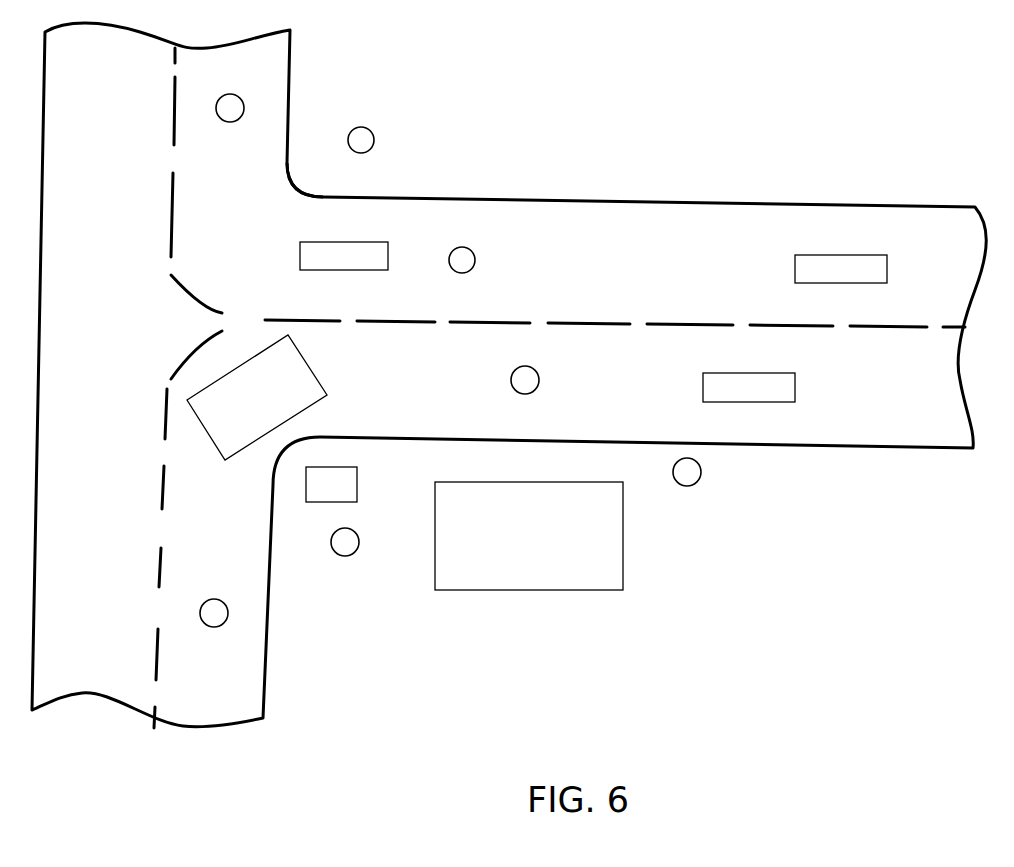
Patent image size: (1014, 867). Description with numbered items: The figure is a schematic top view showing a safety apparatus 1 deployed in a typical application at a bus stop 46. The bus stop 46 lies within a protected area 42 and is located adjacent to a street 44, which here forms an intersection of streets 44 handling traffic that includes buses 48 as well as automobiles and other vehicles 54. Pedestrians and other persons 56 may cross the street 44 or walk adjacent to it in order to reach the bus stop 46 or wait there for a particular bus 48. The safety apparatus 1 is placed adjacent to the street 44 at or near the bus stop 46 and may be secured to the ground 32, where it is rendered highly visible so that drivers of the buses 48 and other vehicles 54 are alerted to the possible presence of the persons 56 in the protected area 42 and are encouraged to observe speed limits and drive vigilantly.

The street 44 is at (327, 208).
The vehicle 54 is at (300, 256).
The person 56 is at (231, 122).
The bus 48 is at (298, 382).
The safety apparatus 1 is at (290, 522).
The ground 32 is at (414, 526).
The bus stop 46 is at (607, 529).
The protected area 42 is at (452, 635).